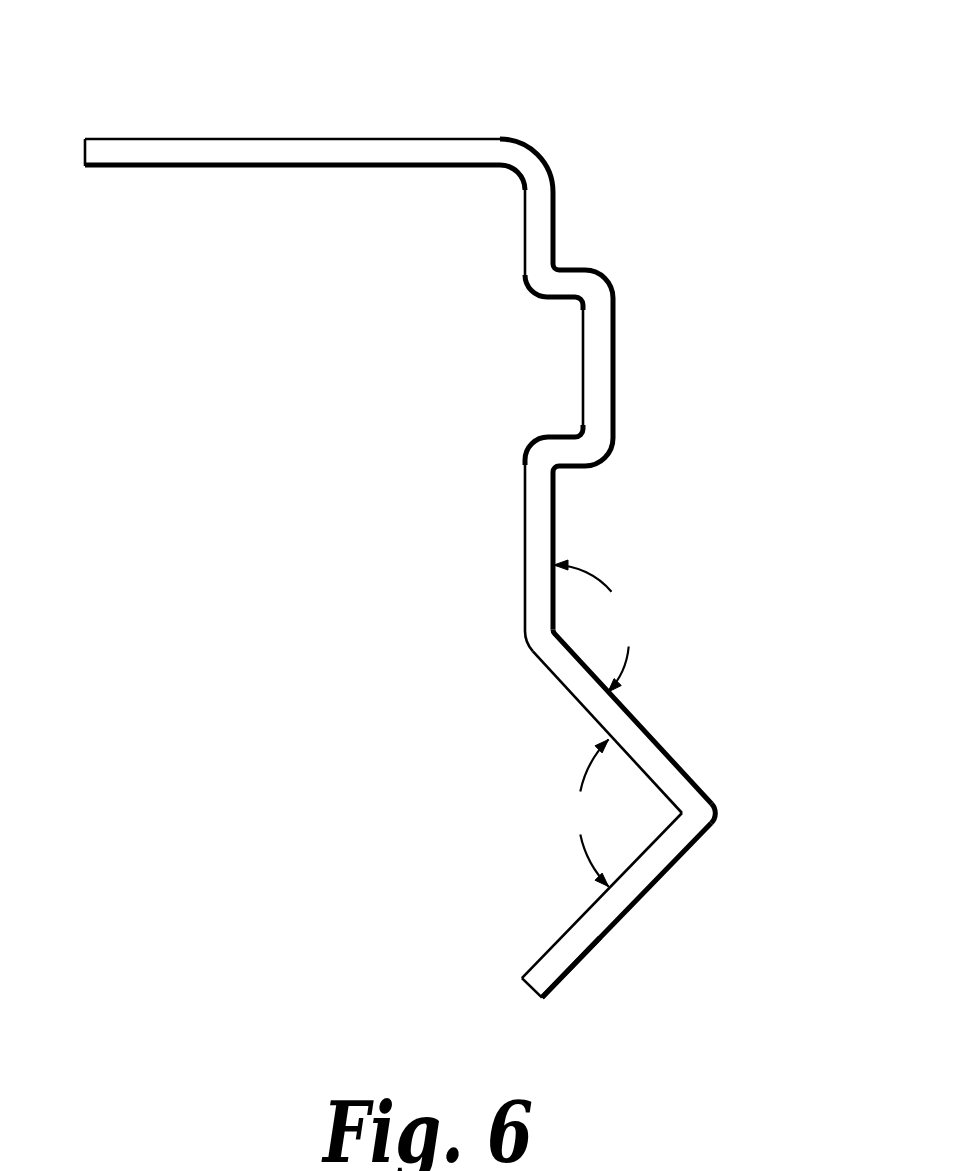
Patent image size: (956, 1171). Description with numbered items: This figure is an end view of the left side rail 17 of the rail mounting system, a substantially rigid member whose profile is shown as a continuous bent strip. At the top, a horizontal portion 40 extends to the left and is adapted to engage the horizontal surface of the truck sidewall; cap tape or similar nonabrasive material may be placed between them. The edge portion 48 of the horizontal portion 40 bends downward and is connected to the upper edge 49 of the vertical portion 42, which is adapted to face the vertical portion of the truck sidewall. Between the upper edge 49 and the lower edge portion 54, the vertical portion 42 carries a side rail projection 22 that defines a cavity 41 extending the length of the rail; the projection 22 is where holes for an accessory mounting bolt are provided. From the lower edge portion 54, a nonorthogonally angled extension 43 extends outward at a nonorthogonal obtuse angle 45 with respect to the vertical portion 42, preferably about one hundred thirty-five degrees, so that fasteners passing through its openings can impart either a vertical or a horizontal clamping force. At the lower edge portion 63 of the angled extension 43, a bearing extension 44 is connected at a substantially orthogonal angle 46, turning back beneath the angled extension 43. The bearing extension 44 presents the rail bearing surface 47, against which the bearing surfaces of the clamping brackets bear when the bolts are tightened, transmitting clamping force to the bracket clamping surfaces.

The left side rail 17 is at (527, 148).
The horizontal portion 40 is at (213, 150).
The edge portion 48 is at (481, 137).
The upper edge 49 is at (553, 190).
The vertical portion 42 is at (519, 233).
The side rail projection 22 is at (592, 343).
The cavity 41 is at (566, 365).
The lower edge portion 54 is at (523, 630).
The nonorthogonal obtuse angle 45 is at (598, 626).
The angled extension 43 is at (628, 717).
The lower edge portion 63 is at (708, 793).
The substantially orthogonal angle 46 is at (585, 813).
The rail bearing surface 47 is at (587, 912).
The bearing extension 44 is at (637, 910).